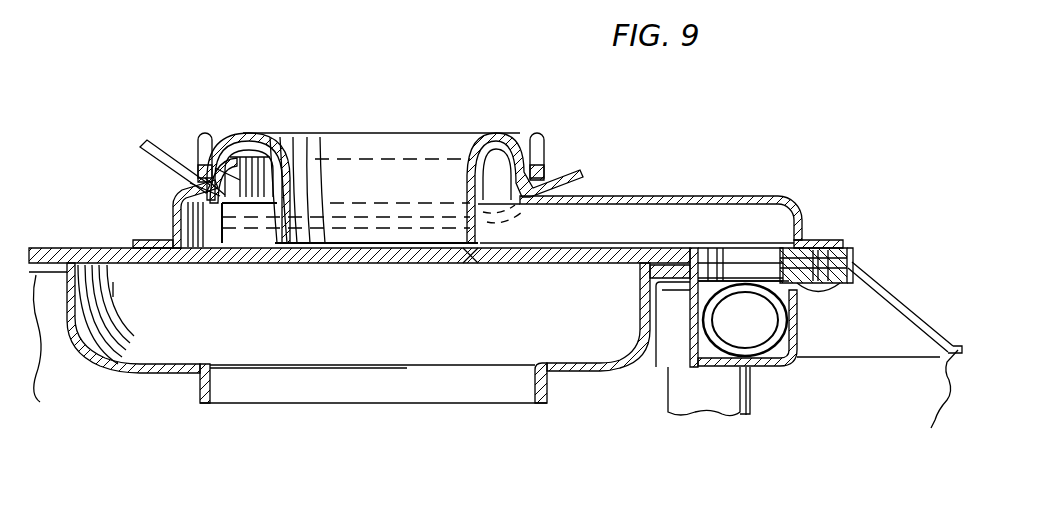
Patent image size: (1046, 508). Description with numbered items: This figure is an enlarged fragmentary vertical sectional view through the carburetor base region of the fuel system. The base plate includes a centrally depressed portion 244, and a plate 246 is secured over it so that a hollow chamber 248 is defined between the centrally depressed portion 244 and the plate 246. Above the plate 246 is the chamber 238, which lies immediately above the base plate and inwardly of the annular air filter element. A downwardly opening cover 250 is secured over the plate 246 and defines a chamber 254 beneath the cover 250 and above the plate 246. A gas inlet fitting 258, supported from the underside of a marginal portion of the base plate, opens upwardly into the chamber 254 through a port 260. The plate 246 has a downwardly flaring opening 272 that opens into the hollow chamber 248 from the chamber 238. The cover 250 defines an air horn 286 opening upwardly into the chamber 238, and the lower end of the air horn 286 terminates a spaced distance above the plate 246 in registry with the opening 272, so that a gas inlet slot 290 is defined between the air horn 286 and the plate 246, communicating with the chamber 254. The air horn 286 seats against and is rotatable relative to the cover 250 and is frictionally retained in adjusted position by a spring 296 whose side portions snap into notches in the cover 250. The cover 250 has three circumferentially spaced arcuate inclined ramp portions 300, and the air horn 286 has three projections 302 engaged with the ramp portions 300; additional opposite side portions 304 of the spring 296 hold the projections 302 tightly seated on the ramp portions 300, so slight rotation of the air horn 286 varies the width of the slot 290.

The chamber 238 is at (698, 146).
The centrally depressed portion 244 is at (115, 375).
The plate 246 is at (94, 247).
The hollow chamber 248 is at (182, 330).
The cover 250 is at (740, 197).
The chamber 254 is at (645, 242).
The gas inlet fitting 258 is at (668, 347).
The port 260 is at (760, 255).
The opening 272 is at (463, 265).
The air horn 286 is at (285, 172).
The gas inlet slot 290 is at (377, 247).
The spring 296 is at (197, 145).
The ramp portion 300 is at (210, 205).
The projection 302 is at (200, 168).
The opposite side portion 304 is at (213, 145).